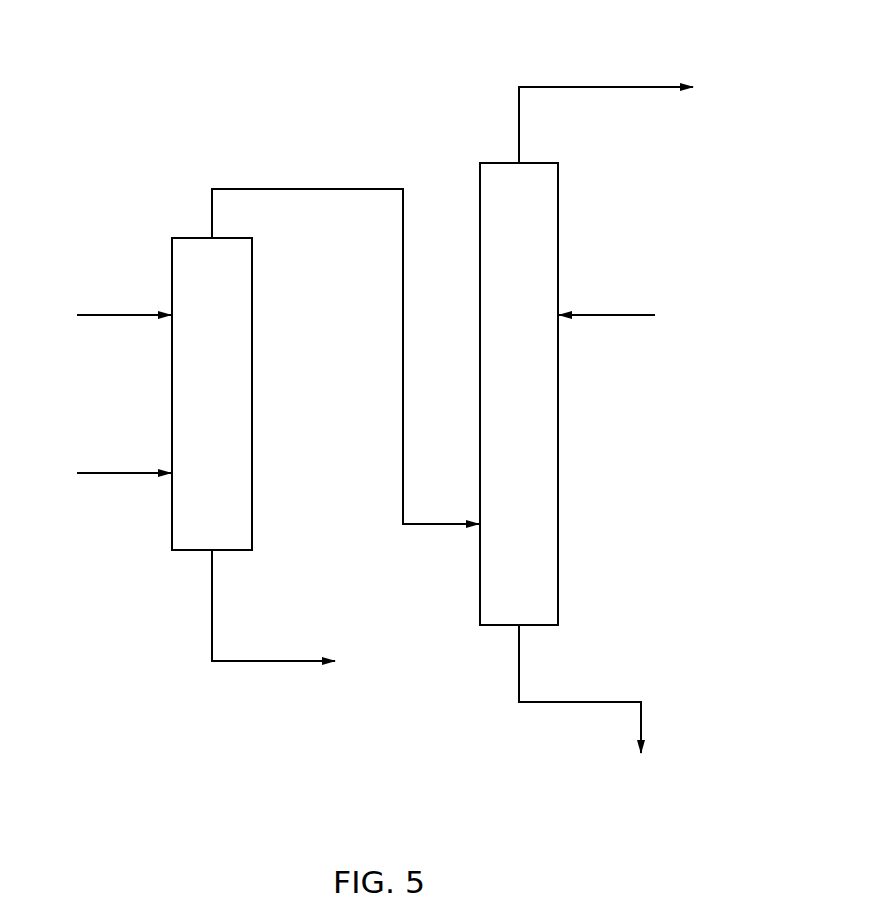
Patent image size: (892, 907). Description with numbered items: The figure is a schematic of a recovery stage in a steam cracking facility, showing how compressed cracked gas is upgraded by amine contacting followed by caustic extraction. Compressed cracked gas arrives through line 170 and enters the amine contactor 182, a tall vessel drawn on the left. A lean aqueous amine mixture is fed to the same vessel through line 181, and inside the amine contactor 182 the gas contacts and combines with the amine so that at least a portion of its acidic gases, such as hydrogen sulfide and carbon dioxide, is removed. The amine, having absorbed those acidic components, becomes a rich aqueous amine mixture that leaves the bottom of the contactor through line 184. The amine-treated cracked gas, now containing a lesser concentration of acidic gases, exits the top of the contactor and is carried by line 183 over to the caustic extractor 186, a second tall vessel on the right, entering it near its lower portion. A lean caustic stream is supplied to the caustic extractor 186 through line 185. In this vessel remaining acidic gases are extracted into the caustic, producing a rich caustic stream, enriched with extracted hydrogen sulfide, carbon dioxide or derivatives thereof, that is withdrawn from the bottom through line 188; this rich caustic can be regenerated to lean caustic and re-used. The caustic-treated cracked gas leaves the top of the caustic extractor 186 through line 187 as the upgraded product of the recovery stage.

The line 170 is at (100, 473).
The line 181 is at (100, 315).
The amine contactor 182 is at (185, 238).
The line 183 is at (268, 189).
The line 184 is at (283, 661).
The line 185 is at (636, 315).
The caustic extractor 186 is at (490, 163).
The line 187 is at (556, 87).
The line 188 is at (608, 702).